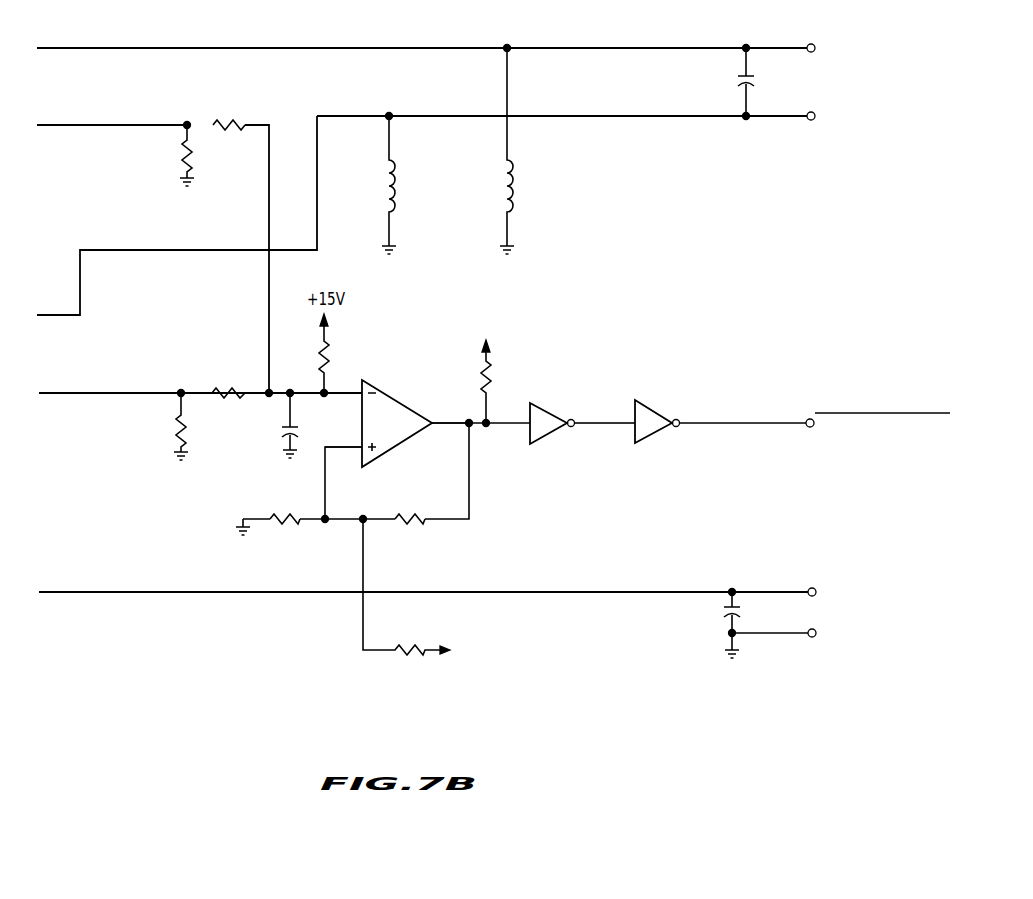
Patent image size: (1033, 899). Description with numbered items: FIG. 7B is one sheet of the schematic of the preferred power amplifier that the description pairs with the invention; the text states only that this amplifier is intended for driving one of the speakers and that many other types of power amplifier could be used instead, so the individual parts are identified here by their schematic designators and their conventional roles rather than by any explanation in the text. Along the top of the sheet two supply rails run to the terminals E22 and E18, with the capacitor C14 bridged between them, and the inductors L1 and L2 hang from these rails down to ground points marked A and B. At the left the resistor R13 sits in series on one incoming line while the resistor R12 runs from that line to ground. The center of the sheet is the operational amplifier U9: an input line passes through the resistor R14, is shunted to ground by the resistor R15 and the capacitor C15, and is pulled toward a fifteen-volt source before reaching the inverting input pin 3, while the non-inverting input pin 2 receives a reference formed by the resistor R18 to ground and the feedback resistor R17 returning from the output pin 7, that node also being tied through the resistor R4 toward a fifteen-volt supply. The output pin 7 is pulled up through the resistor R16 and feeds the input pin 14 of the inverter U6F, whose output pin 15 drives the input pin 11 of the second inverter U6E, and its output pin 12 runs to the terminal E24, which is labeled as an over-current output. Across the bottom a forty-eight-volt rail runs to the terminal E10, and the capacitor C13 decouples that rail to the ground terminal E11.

The resistor R13 is at (230, 115).
The resistor R12 is at (200, 155).
The inductor L2 is at (403, 192).
The inductor L1 is at (520, 158).
The capacitor C14 is at (762, 82).
The terminal E22 is at (776, 34).
The terminal E18 is at (784, 129).
The resistor R14 is at (228, 382).
The resistor R15 is at (194, 426).
The capacitor C15 is at (305, 425).
The operational amplifier U9 is at (424, 419).
The inverting input pin 3 of U9 3 is at (343, 382).
The non-inverting input pin 2 of U9 2 is at (343, 436).
The output pin 7 of U9 7 is at (450, 410).
The resistor R16 is at (498, 369).
The input pin 14 of inverter U6F 14 is at (508, 412).
The inverter U6F is at (552, 411).
The output pin 15 of inverter U6F 15 is at (589, 412).
The input pin 11 of inverter U6E 11 is at (620, 412).
The inverter U6E is at (657, 412).
The output pin 12 of inverter U6E 12 is at (710, 411).
The over current output terminal E24 is at (845, 418).
The resistor R18 is at (268, 514).
The feedback resistor R17 is at (410, 508).
The resistor R4 is at (428, 590).
The +48V terminal E10 is at (800, 585).
The capacitor C13 is at (712, 625).
The ground terminal E11 is at (797, 626).